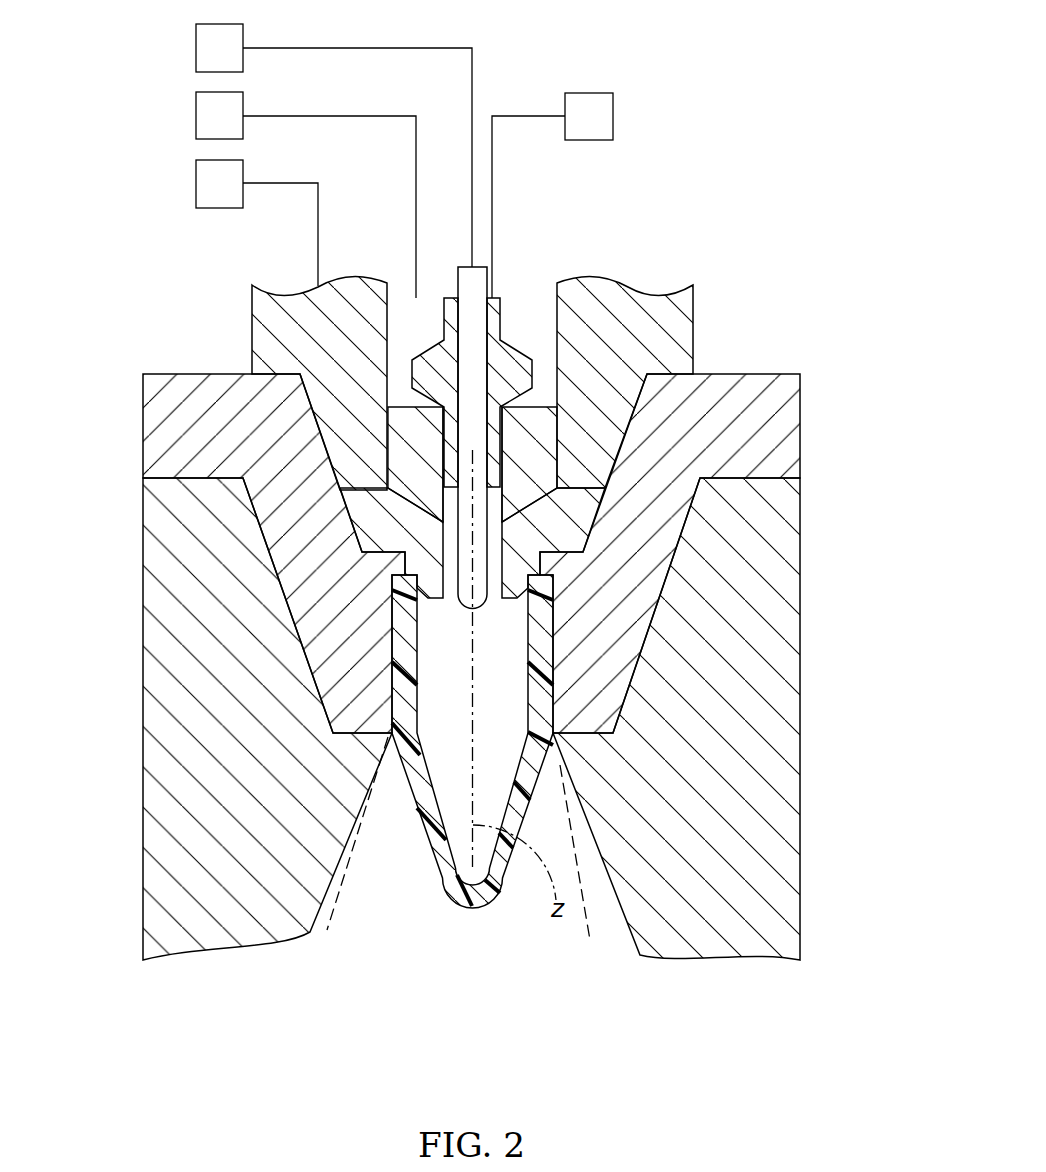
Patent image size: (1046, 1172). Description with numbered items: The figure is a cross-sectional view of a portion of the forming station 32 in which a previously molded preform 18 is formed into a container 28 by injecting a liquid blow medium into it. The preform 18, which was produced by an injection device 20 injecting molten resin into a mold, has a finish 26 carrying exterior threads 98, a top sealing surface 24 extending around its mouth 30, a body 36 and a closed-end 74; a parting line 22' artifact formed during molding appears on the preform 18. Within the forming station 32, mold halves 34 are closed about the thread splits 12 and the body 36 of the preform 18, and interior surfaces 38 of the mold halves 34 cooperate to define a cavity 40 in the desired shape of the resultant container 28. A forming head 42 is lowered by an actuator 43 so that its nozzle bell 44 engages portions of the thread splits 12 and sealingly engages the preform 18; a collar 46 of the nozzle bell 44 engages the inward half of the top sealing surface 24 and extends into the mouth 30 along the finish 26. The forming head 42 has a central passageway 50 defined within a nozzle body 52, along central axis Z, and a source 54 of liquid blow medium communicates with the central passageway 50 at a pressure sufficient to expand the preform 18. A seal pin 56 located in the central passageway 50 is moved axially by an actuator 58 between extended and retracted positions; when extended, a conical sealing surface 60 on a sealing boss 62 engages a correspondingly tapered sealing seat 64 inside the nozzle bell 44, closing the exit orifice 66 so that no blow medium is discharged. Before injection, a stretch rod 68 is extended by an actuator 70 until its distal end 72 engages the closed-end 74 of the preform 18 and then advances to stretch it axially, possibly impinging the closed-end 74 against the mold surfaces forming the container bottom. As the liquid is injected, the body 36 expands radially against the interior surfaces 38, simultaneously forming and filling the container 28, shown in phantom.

The thread splits 12 is at (170, 428).
The preform 18 is at (538, 807).
The injection device 20 is at (213, 267).
The parting line 22' is at (251, 509).
The top sealing surface 24 is at (540, 553).
The finish 26 is at (540, 642).
The container 28 is at (590, 942).
The mouth 30 is at (372, 643).
The forming station 32 is at (736, 131).
The mold halves 34 is at (170, 876).
The body 36 is at (535, 773).
The interior surfaces 38 is at (327, 893).
The cavity 40 is at (386, 882).
The forming head 42 is at (697, 310).
The actuator 43 is at (211, 186).
The nozzle bell 44 is at (545, 515).
The collar 46 is at (425, 577).
The central passageway 50 is at (417, 444).
The nozzle body 52 is at (662, 340).
The source 54 is at (211, 117).
The seal pin 56 is at (498, 318).
The actuator 58 is at (588, 115).
The sealing surface 60 is at (523, 414).
The sealing boss 62 is at (430, 367).
The sealing seat 64 is at (420, 503).
The exit orifice 66 is at (505, 519).
The stretch rod 68 is at (475, 446).
The actuator 70 is at (211, 48).
The distal end 72 is at (466, 620).
The closed-end 74 is at (458, 896).
The exterior threads 98 is at (380, 622).